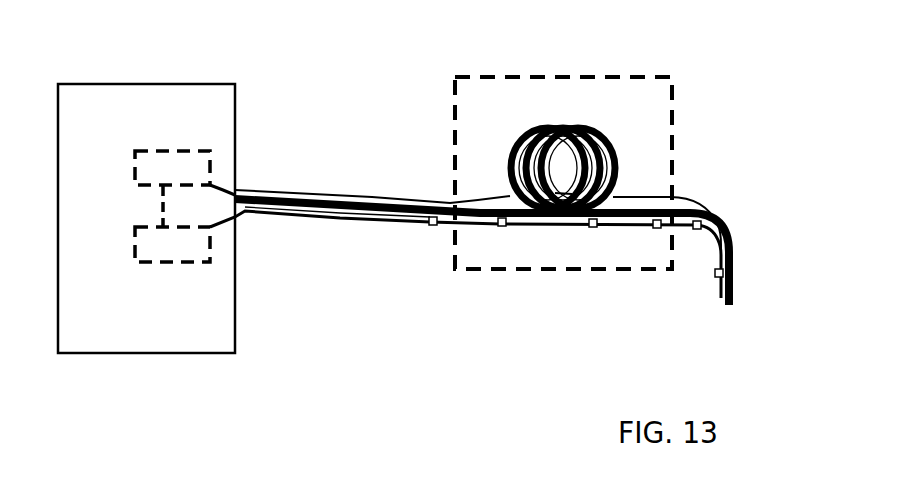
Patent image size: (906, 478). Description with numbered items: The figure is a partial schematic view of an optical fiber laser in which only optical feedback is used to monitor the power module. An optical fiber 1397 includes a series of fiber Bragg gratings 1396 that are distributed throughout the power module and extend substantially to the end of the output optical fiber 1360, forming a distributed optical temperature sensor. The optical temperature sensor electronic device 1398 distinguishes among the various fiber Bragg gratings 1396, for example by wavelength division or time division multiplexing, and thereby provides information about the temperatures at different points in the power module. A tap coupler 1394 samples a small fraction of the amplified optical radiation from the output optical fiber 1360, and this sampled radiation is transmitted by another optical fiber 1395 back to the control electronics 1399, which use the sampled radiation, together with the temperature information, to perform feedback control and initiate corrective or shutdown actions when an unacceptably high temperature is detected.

The output optical fiber 1360 is at (735, 283).
The tap coupler 1394 is at (706, 200).
The optical fiber 1395 is at (372, 196).
The fiber Bragg gratings 1396 is at (437, 225).
The optical fiber 1397 is at (307, 219).
The optical temperature sensor electronic device 1398 is at (165, 262).
The control electronics 1399 is at (162, 150).